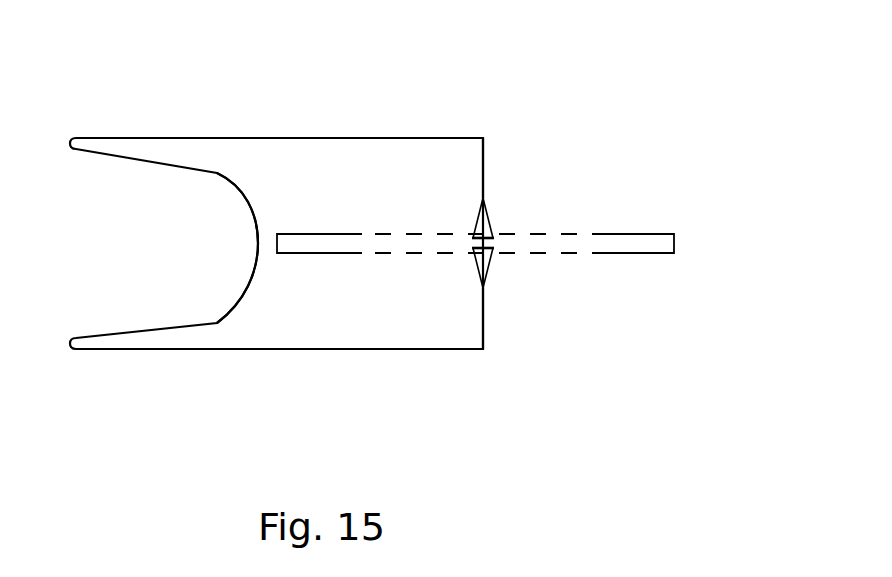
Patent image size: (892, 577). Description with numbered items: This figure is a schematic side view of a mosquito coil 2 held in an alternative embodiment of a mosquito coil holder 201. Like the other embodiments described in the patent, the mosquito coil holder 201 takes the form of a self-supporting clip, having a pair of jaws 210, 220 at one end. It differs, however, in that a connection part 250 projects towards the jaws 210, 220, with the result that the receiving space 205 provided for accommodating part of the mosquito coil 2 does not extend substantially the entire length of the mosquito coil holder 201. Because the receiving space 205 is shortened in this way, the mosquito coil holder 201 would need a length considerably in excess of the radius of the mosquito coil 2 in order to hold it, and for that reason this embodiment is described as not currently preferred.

The mosquito coil holder 201 is at (433, 95).
The receiving space 205 is at (395, 215).
The jaw 210 is at (483, 167).
The jaw 220 is at (483, 320).
The connection part 250 is at (225, 180).
The mosquito coil 2 is at (627, 234).